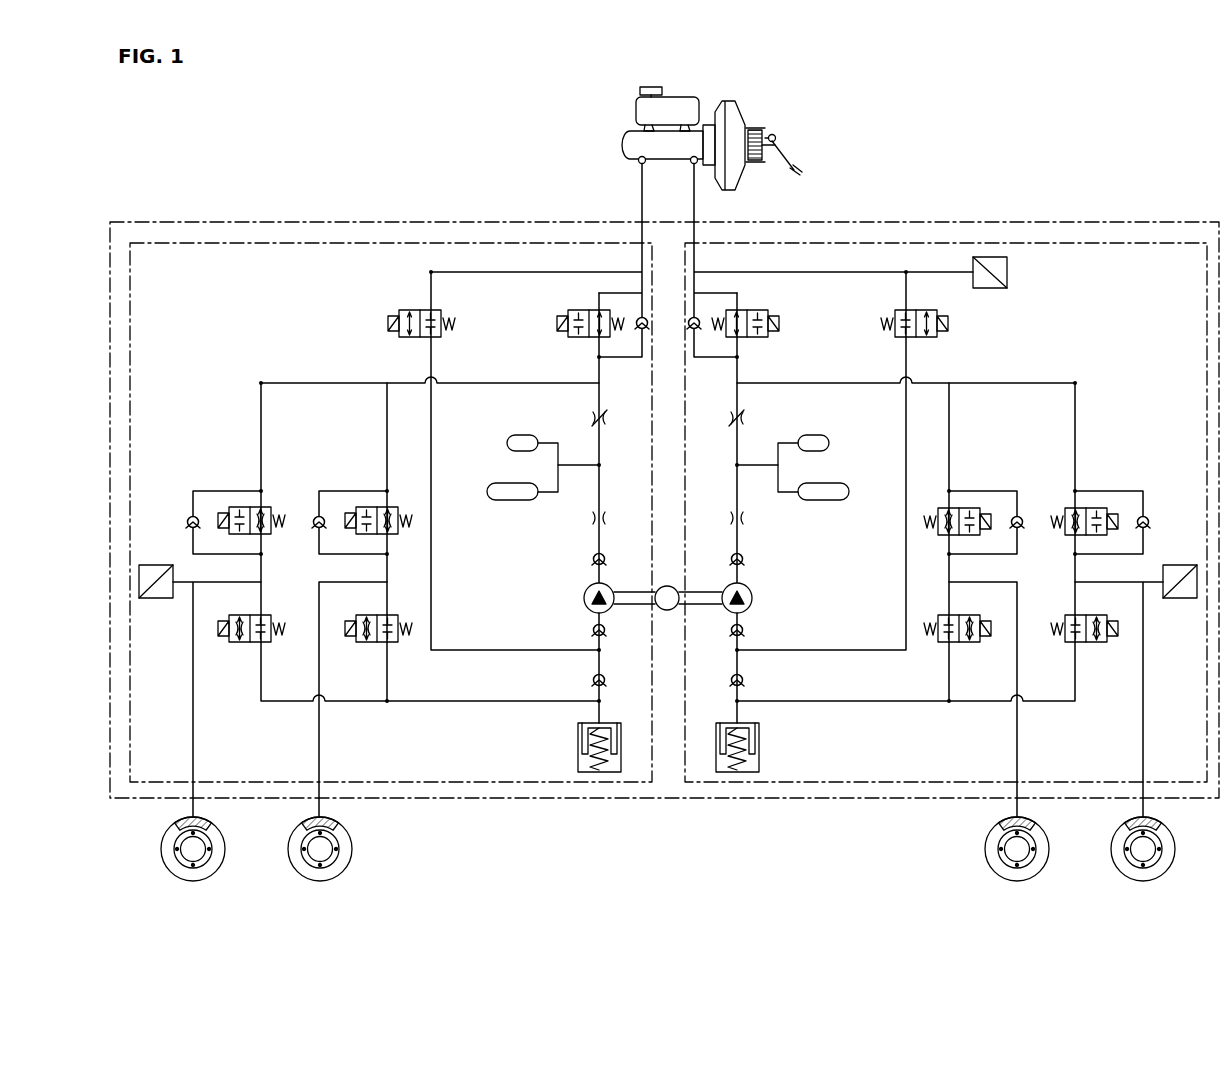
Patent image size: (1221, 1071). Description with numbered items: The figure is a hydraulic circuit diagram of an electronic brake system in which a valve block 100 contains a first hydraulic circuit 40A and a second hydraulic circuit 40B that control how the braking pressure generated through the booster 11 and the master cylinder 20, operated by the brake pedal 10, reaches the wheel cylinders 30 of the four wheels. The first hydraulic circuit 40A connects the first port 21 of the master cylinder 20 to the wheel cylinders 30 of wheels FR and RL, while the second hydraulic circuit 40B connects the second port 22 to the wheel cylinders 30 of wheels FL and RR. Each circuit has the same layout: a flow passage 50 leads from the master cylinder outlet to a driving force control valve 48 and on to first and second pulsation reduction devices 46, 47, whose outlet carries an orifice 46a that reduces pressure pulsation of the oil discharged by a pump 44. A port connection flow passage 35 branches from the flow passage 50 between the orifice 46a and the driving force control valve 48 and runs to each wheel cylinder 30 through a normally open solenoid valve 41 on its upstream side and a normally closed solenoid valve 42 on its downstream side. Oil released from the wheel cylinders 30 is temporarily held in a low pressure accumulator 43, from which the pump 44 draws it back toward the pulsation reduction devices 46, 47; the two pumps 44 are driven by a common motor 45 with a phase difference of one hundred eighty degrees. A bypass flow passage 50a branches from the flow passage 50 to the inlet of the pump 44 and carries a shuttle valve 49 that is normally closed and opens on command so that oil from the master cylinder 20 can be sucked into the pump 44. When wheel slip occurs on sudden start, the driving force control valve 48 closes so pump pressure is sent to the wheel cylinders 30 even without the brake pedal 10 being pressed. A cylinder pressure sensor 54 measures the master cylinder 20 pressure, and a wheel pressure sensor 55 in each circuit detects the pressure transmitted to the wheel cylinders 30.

The brake pedal 10 is at (770, 140).
The booster 11 is at (742, 180).
The master cylinder 20 is at (622, 147).
The first port 21 is at (694, 166).
The second port 22 is at (642, 166).
The wheel cylinder 30 is at (165, 840).
The port connection flow passage 35 is at (310, 383).
The first hydraulic circuit 40A is at (290, 243).
The second hydraulic circuit 40B is at (983, 243).
The normally open type solenoid valve 41 is at (233, 507).
The normally closed type solenoid valve 42 is at (233, 615).
The low pressure accumulator 43 is at (578, 745).
The pump 44 is at (585, 605).
The motor 45 is at (668, 610).
The first pulsation reduction device 46 is at (487, 492).
The orifice 46a is at (593, 420).
The second pulsation reduction device 47 is at (507, 443).
The driving force control valve 48 is at (580, 310).
The shuttle valve 49 is at (412, 310).
The flow passage 50 is at (599, 370).
The bypass flow passage 50a is at (431, 573).
The cylinder pressure sensor 54 is at (1007, 270).
The wheel pressure sensor 55 is at (156, 565).
The valve block 100 is at (915, 222).